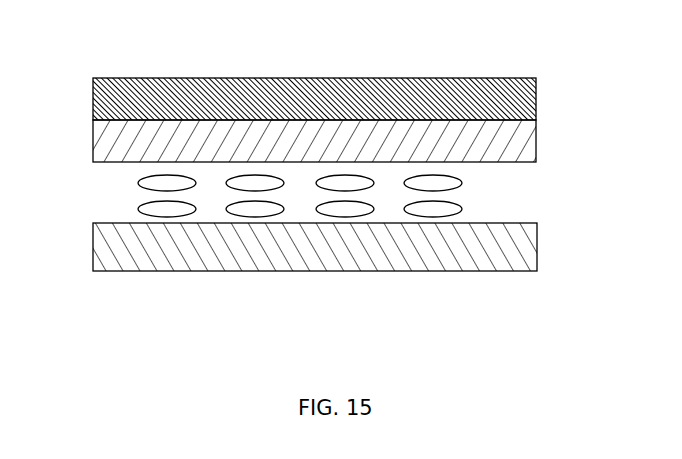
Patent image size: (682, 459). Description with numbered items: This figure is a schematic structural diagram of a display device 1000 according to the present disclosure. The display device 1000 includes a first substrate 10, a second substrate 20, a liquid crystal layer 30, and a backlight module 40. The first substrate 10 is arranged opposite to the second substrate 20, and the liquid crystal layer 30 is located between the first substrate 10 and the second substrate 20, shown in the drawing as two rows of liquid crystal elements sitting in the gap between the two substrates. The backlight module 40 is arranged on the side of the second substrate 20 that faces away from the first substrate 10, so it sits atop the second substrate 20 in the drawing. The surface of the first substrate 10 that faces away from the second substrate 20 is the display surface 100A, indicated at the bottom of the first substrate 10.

The display device 1000 is at (136, 48).
The backlight module 40 is at (530, 93).
The second substrate 20 is at (522, 141).
The liquid crystal layer 30 is at (157, 208).
The first substrate 10 is at (516, 233).
The display surface 100A is at (508, 274).